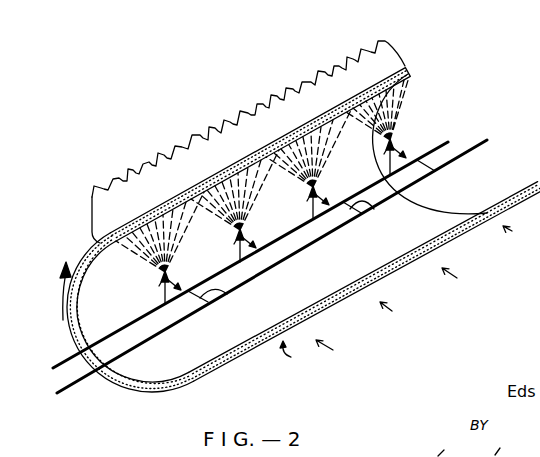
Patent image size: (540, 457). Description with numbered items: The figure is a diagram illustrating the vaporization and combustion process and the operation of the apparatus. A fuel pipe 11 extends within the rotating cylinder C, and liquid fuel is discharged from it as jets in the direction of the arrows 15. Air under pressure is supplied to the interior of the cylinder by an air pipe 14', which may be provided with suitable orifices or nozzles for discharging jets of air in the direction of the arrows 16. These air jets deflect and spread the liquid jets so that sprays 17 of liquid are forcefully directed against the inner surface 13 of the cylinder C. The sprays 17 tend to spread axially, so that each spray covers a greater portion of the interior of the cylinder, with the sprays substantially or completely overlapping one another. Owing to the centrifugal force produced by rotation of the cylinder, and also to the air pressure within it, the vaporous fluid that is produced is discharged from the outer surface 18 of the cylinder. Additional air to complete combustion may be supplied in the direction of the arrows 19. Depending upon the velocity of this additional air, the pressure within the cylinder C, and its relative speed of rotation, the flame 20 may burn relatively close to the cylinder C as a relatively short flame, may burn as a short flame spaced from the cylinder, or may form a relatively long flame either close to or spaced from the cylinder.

The fuel pipe 11 is at (73, 351).
The inner surface 13 is at (90, 300).
The air pipe 14' is at (270, 274).
The arrows 15 is at (164, 300).
The arrows 16 is at (229, 288).
The sprays 17 is at (172, 245).
The outer surface 18 is at (95, 243).
The arrows 19 is at (392, 312).
The flame 20 is at (383, 56).
The rotating cylinder C is at (291, 356).